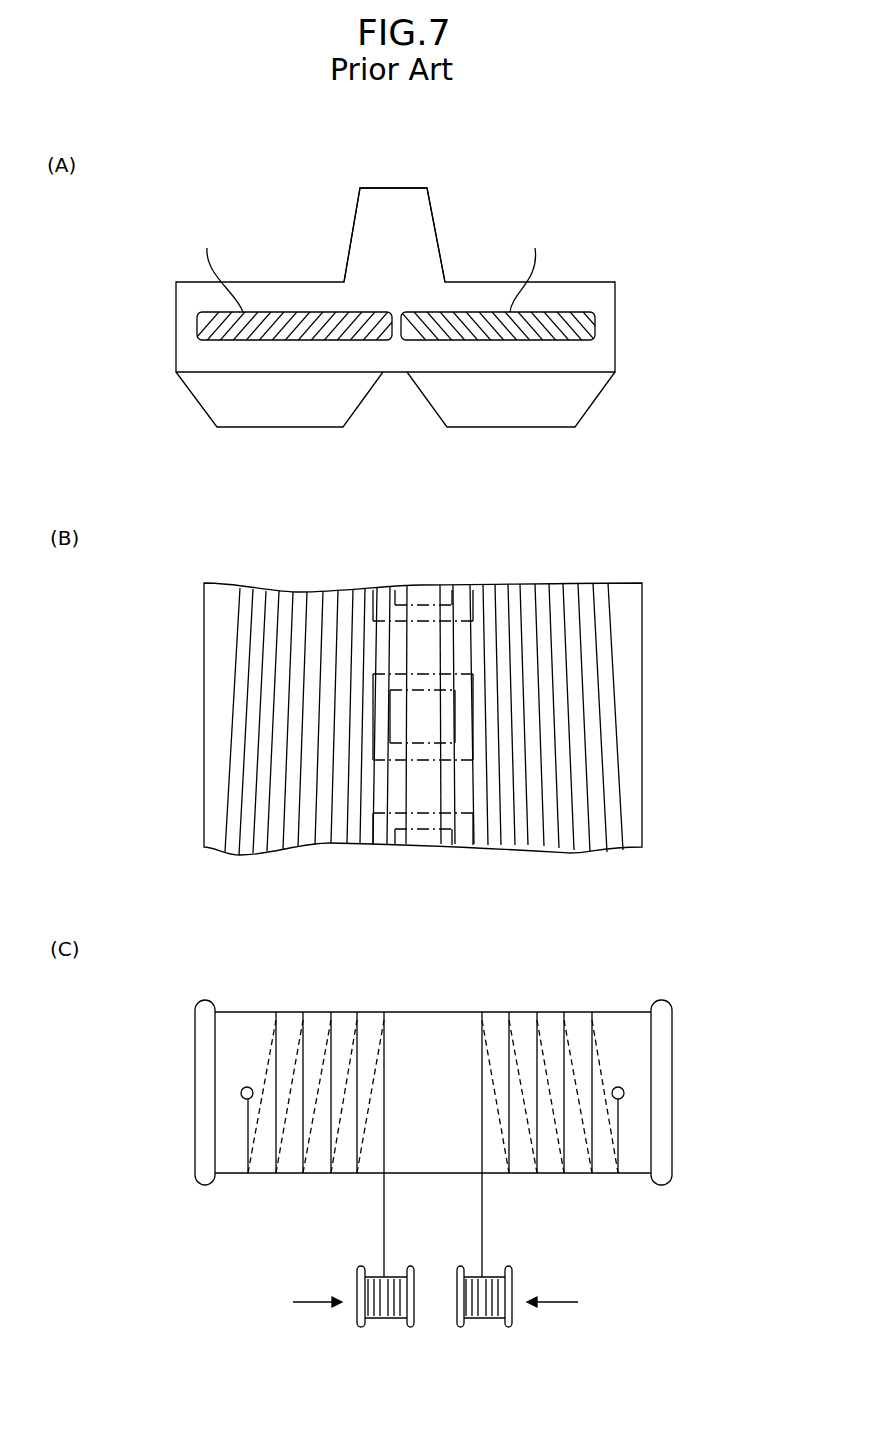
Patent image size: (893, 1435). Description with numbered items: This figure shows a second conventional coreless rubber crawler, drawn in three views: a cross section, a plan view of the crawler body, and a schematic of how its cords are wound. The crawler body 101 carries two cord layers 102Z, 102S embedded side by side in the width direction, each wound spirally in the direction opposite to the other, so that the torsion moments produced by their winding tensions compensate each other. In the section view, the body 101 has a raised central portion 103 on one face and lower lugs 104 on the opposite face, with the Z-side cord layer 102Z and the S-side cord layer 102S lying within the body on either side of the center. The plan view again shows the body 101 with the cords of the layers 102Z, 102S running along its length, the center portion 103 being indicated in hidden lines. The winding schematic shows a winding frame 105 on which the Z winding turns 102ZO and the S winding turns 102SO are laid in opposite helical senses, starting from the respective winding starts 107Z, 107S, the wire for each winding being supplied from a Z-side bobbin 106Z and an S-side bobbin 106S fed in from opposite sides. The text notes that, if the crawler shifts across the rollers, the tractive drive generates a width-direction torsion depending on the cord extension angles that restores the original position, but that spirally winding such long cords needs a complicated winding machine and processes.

The magnetic core (wound core) 101 is at (319, 282).
The cord layer 102Z is at (198, 328).
The cord layer 102S is at (592, 328).
The center pole / core projection 103 is at (425, 218).
The core legs 104 is at (450, 398).
The winding frame (bobbin holder) 105 is at (430, 1012).
The Z winding start terminal 107Z is at (241, 1095).
The S winding start terminal 107S is at (624, 1096).
The Z winding turns 102ZO is at (327, 1155).
The S winding turns 102SO is at (540, 1152).
The Z wire supply bobbin 106Z is at (380, 1322).
The S wire supply bobbin 106S is at (482, 1322).